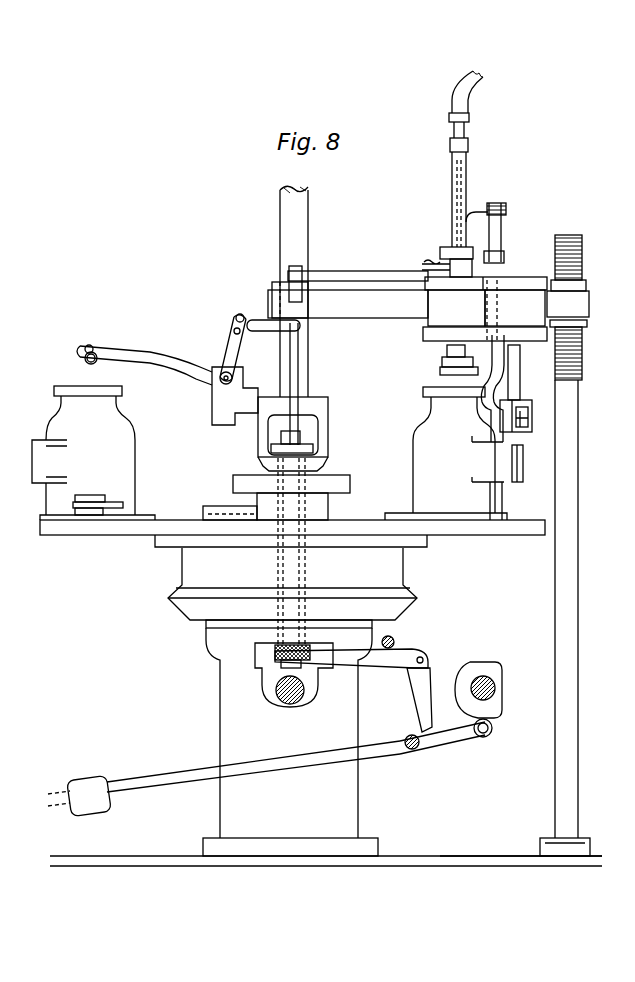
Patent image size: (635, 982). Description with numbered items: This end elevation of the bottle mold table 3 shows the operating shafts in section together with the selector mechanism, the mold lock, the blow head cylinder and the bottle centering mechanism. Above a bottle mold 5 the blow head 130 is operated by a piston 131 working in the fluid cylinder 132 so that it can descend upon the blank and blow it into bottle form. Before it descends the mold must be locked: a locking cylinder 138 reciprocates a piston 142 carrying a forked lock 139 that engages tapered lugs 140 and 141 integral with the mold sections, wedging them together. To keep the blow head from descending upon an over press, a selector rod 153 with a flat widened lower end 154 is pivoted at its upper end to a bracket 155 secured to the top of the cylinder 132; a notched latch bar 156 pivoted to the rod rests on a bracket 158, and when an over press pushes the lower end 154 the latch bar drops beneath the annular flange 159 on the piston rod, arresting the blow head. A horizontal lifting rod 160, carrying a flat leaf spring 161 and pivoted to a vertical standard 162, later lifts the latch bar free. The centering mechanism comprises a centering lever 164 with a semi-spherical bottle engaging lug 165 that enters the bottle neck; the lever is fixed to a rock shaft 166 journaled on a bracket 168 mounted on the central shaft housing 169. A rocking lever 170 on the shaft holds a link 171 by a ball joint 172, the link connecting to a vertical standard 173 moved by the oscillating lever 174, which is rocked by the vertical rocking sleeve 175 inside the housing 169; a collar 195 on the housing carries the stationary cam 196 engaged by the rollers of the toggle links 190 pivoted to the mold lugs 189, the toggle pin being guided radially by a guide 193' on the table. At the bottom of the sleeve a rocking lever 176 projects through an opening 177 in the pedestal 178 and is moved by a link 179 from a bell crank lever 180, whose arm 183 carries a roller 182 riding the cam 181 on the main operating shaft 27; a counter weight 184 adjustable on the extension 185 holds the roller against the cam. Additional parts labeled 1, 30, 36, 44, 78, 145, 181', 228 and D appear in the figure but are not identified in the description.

The base/floor 1 is at (448, 860).
The table 3 is at (125, 532).
The mold 5 is at (135, 468).
The main operating shaft 27 is at (498, 692).
The upright column 30 is at (578, 596).
The shaft 36 is at (288, 706).
The spool / turret hub 44 is at (186, 608).
The vertical post 78 is at (298, 220).
The blow head 130 is at (442, 362).
The piston 131 is at (447, 351).
The fluid cylinder 132 is at (428, 302).
The locking cylinder 138 is at (512, 300).
The forked lock 139 is at (524, 404).
The lug 140 is at (508, 472).
The lug 141 is at (522, 468).
The piston 142 is at (520, 375).
The cross plate 145 is at (376, 312).
The selector rod 153 is at (491, 341).
The flat widened lower end 154 is at (488, 402).
The bracket 155 is at (472, 212).
The notched latch bar 156 is at (500, 252).
The bracket 158 is at (455, 284).
The annular flange 159 is at (445, 250).
The horizontal lifting rod 160 is at (345, 273).
The flat leaf spring 161 is at (440, 268).
The vertical standard 162 is at (272, 292).
The centering lever 164 is at (142, 353).
The semi-spherical bottle engaging lug 165 is at (85, 359).
The rock shaft 166 is at (214, 385).
The bracket 168 is at (216, 414).
The central standard or shaft housing 169 is at (272, 404).
The rocking lever 170 is at (228, 340).
The link 171 is at (273, 337).
The ball joint 172 is at (258, 316).
The vertical standard 173 is at (302, 364).
The oscillating lever 174 is at (318, 452).
The vertical rocking sleeve 175 is at (306, 592).
The rocking lever 176 is at (275, 653).
The opening 177 is at (312, 674).
The bottle mold table pedestal 178 is at (358, 785).
The link 179 is at (378, 662).
The bell crank lever 180 is at (420, 684).
The cam 181 is at (492, 680).
The pivot stud 181' is at (392, 731).
The roller 182 is at (492, 736).
The arm 183 is at (458, 737).
The counter weight 184 is at (100, 778).
The bell crank lever extension 185 is at (195, 786).
The lug 189 is at (72, 492).
The toggle link 190 is at (118, 494).
The guide 193' is at (222, 501).
The collar 195 is at (335, 506).
The stationary cam 196 is at (352, 485).
The stud 228 is at (395, 641).
The bottle (filling station) D is at (438, 450).